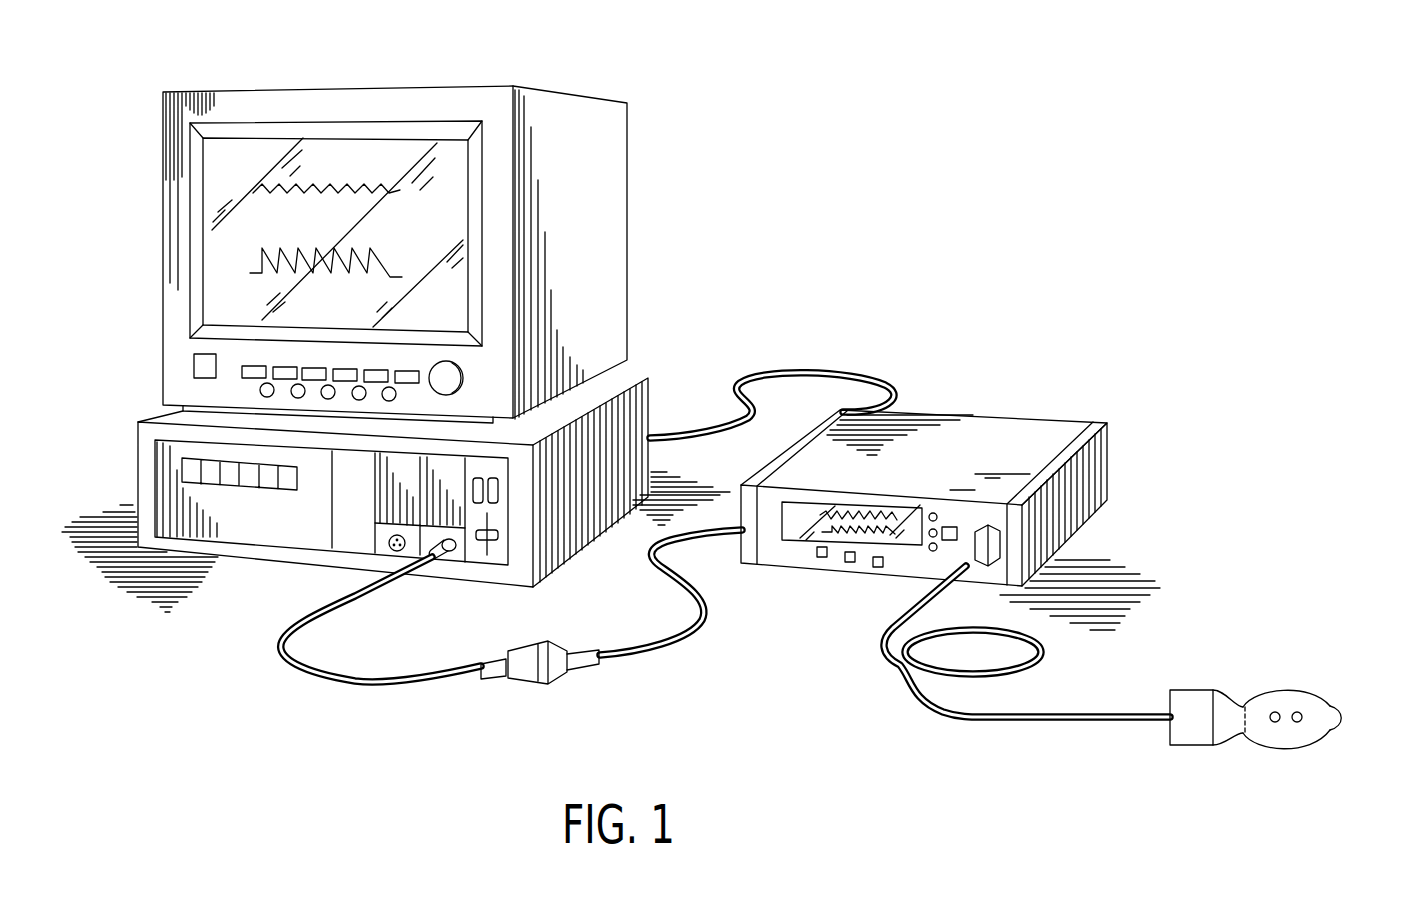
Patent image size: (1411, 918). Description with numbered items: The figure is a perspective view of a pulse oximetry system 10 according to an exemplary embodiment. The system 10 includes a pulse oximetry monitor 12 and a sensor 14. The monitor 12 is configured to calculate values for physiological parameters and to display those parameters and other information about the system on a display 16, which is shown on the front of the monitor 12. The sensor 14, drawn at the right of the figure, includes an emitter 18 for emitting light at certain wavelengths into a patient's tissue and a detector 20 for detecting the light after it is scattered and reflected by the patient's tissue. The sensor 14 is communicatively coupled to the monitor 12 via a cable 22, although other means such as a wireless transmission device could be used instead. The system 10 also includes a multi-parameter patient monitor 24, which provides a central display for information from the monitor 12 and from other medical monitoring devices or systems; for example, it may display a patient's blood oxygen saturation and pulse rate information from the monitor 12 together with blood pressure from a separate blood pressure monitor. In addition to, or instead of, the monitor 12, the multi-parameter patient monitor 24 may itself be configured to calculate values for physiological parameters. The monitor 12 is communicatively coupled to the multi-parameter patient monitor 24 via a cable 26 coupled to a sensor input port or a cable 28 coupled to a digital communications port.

The pulse oximetry system 10 is at (942, 170).
The pulse oximetry monitor 12 is at (950, 498).
The sensor 14 is at (1283, 706).
The display 16 is at (812, 530).
The emitter 18 is at (1275, 722).
The detector 20 is at (1297, 722).
The cable 22 is at (913, 700).
The multi-parameter patient monitor 24 is at (573, 102).
The cable 26 is at (643, 657).
The cable 28 is at (822, 372).